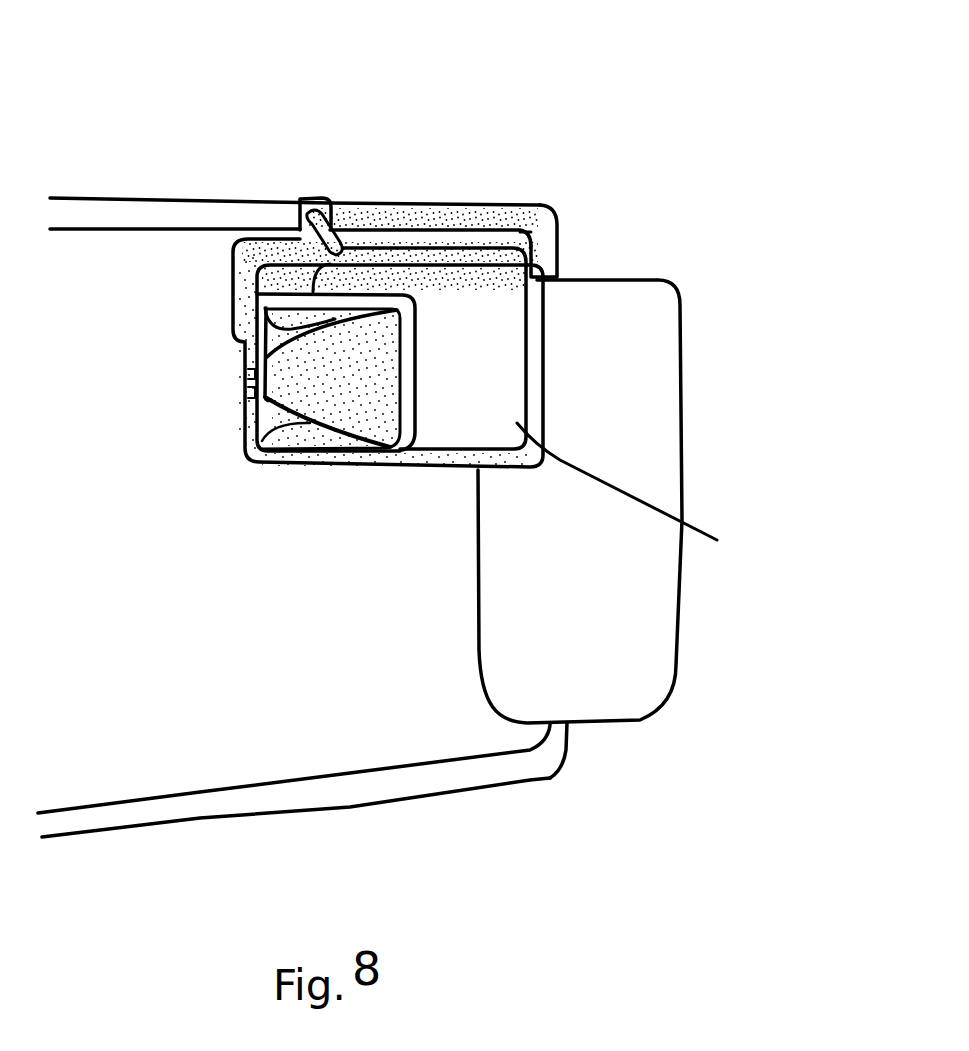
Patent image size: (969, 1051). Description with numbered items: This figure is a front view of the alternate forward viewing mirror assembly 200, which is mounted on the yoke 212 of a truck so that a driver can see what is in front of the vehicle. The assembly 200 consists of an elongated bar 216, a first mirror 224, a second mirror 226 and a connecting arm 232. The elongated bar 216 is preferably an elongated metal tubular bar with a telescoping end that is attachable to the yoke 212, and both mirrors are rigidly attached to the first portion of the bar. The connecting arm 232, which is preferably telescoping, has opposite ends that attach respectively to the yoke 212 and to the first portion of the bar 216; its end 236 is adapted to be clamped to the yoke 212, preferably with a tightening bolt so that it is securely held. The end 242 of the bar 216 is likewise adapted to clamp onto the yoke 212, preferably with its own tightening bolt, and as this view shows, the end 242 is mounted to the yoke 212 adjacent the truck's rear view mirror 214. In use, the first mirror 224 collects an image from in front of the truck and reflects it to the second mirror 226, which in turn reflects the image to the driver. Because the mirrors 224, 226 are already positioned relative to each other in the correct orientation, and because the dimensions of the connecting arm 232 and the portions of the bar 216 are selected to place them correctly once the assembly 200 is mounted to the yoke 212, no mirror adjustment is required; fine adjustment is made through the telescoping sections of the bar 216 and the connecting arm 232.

The forward viewing mirror assembly 200 is at (428, 313).
The yoke 212 is at (165, 222).
The rear view mirror 214 is at (663, 402).
The elongated bar 216 is at (283, 250).
The first mirror 224 is at (663, 501).
The second mirror 226 is at (362, 414).
The connecting arm 232 is at (345, 201).
The end of connecting arm 236 is at (320, 197).
The end of bar 242 is at (545, 251).